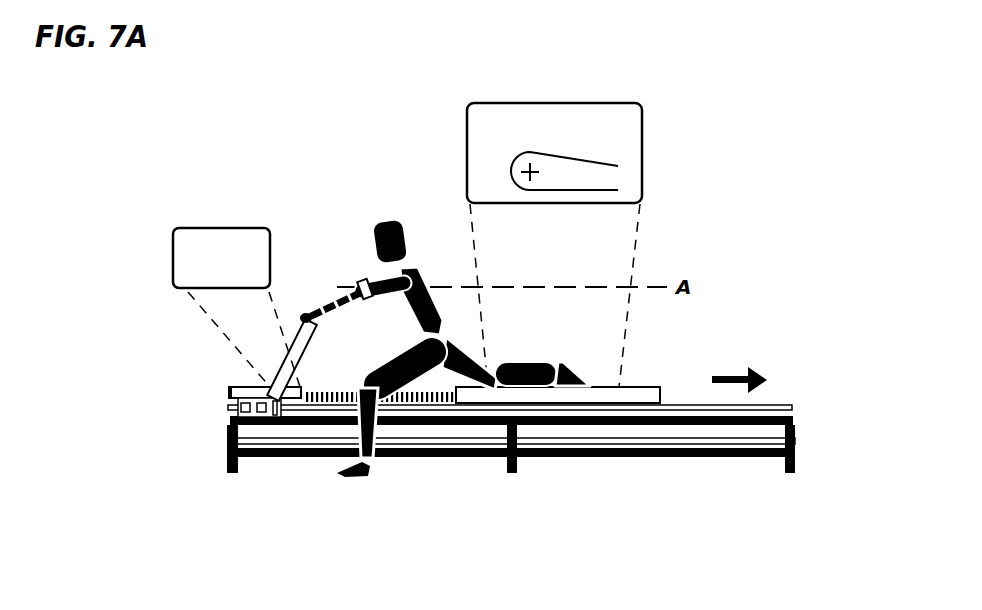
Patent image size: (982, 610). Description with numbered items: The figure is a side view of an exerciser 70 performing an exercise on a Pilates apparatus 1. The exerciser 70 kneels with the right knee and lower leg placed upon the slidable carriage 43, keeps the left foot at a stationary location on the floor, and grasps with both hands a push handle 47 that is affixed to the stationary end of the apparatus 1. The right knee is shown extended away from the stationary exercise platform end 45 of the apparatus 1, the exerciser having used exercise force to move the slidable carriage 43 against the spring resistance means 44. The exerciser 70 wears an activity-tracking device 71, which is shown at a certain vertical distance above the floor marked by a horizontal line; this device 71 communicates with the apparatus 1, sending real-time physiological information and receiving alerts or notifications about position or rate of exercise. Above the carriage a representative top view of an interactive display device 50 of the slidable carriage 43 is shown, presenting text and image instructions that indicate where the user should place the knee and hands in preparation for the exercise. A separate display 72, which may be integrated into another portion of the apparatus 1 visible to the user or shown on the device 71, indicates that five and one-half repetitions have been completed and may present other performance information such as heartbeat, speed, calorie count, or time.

The Pilates apparatus 1 is at (752, 476).
The slidable carriage 43 is at (645, 383).
The spring resistance means 44 is at (326, 400).
The stationary exercise platform end 45 is at (227, 392).
The push handle 47 is at (307, 316).
The interactive display device 50 is at (642, 133).
The exerciser 70 is at (380, 435).
The activity-tracking device 71 is at (362, 281).
The display 72 is at (173, 248).